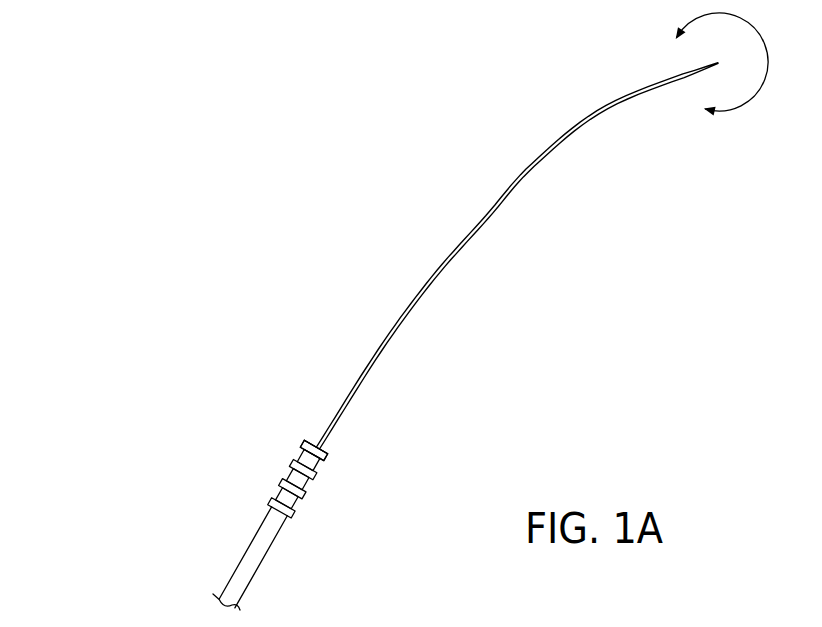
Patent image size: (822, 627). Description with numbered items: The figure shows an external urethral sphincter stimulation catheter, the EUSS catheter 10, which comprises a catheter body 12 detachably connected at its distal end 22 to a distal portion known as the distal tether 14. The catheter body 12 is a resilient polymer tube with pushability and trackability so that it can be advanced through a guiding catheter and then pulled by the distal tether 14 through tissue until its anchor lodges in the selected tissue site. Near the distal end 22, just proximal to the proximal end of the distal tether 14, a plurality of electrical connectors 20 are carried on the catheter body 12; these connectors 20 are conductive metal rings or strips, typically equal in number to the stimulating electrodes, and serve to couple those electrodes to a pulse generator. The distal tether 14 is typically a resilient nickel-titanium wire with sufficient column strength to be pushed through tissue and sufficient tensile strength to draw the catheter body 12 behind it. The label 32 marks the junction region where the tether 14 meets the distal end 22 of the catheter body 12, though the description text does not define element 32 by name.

The EUSS catheter 10 is at (259, 267).
The catheter body 12 is at (265, 560).
The distal tether 14 is at (528, 168).
The electrical connectors 20 is at (302, 444).
The distal end 22 is at (343, 447).
The distal end of shaft 32 is at (310, 420).